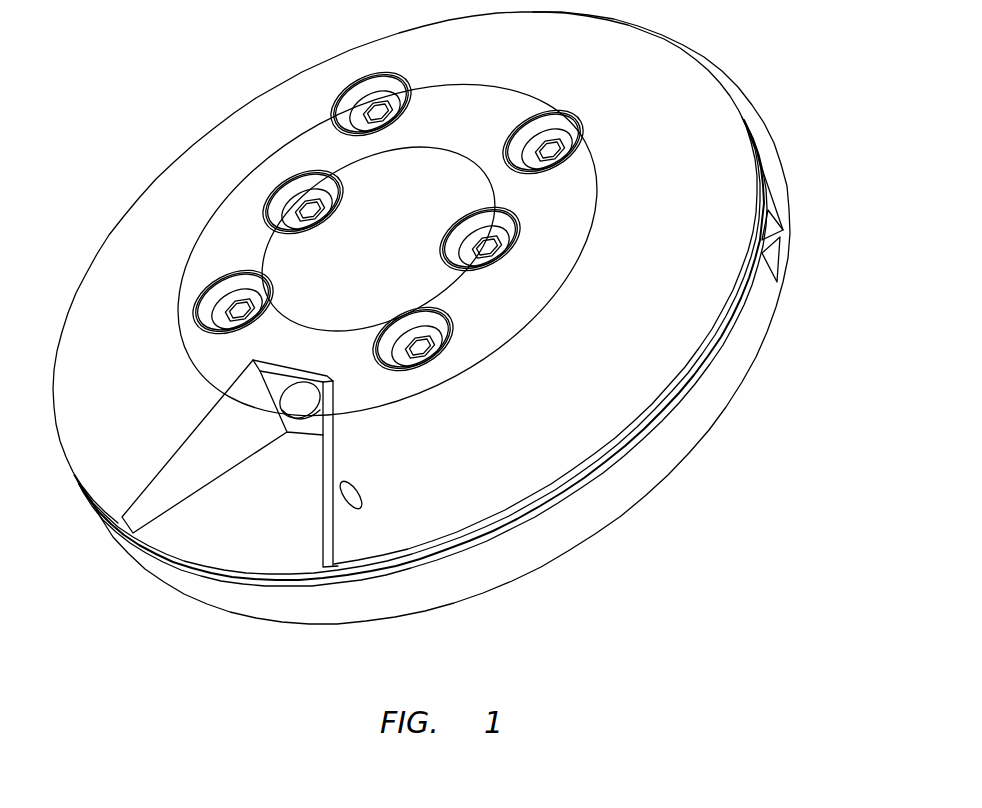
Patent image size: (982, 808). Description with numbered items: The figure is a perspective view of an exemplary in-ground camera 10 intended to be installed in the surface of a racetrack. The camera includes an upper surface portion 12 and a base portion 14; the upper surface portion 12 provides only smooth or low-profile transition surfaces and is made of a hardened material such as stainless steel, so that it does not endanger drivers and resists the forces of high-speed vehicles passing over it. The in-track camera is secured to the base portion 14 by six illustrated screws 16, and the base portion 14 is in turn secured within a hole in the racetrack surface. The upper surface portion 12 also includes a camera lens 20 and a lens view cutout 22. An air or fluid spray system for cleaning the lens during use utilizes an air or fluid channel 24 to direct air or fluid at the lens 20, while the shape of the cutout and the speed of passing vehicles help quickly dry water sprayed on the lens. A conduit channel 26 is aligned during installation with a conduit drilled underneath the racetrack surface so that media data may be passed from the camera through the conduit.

The in-ground camera 10 is at (105, 97).
The upper surface portion 12 is at (713, 302).
The base portion 14 is at (748, 357).
The screws 16 is at (585, 148).
The camera lens 20 is at (287, 385).
The lens view cutout 22 is at (180, 528).
The air or fluid channel 24 is at (358, 492).
The conduit channel 26 is at (777, 247).